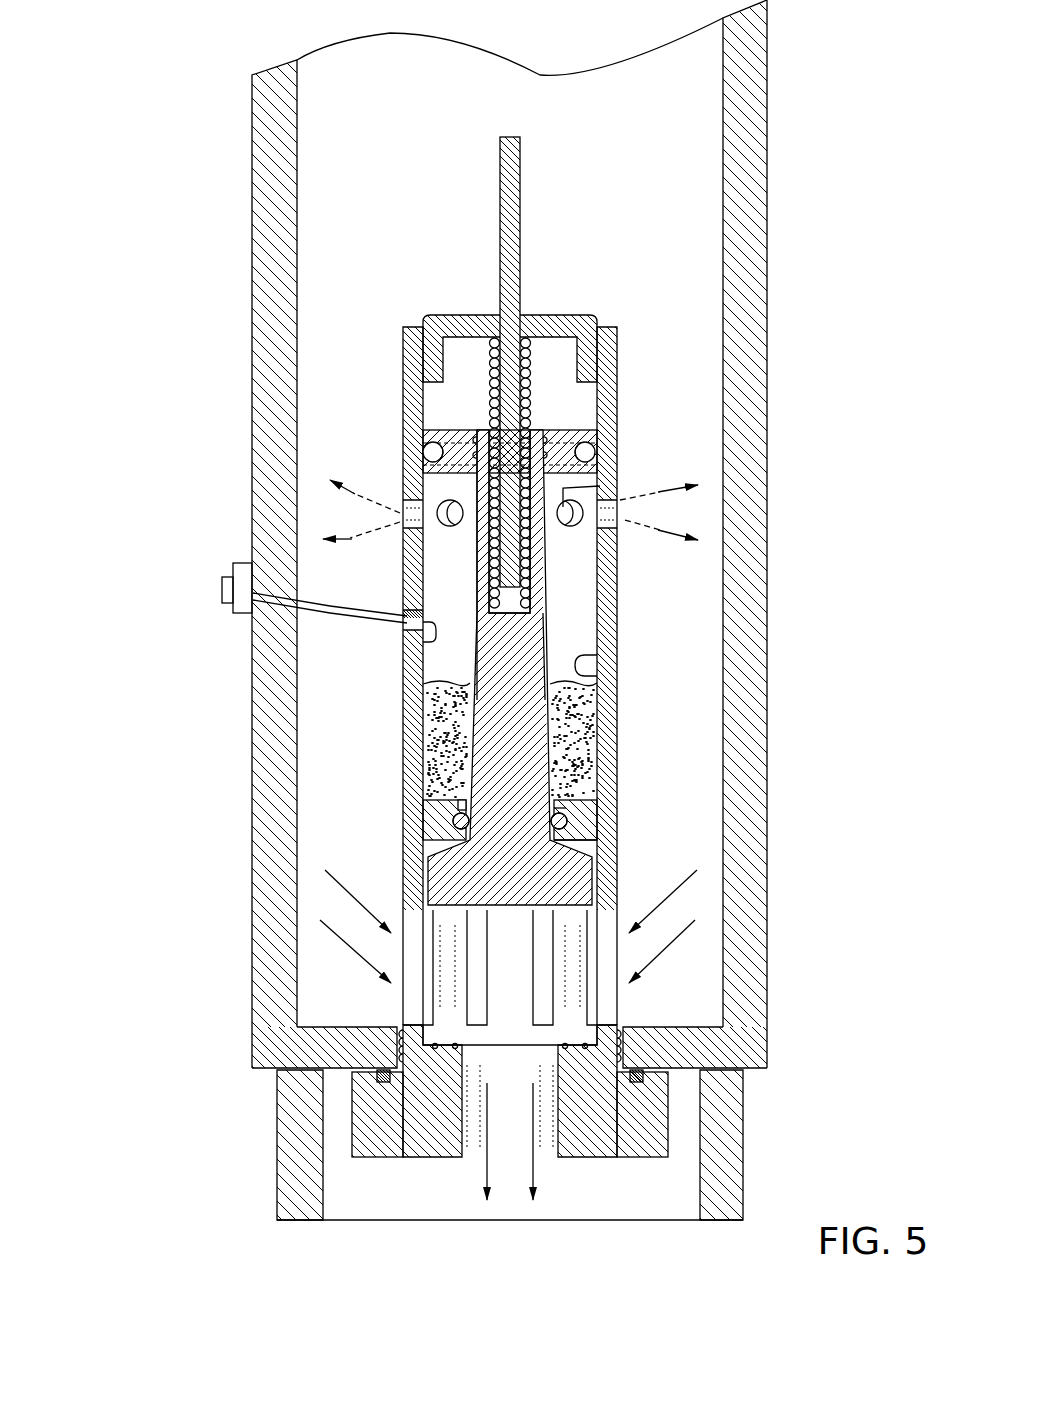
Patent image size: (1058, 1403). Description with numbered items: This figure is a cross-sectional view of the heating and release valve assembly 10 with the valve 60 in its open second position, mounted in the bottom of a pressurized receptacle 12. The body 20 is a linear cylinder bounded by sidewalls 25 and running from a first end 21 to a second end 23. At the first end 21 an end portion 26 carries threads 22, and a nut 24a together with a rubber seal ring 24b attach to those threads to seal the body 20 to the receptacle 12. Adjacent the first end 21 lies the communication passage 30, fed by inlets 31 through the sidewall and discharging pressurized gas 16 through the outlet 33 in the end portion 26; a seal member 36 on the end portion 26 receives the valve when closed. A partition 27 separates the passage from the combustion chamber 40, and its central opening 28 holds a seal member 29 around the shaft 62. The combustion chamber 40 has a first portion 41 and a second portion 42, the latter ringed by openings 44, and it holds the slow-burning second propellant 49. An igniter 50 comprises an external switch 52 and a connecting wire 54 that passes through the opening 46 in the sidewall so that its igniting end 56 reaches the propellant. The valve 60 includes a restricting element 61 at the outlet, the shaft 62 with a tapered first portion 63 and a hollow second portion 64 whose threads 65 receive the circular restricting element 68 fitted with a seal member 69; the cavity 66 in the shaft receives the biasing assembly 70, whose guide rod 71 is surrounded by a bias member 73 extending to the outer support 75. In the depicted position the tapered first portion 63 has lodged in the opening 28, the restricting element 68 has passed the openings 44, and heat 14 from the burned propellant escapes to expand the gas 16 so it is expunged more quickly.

The heating and release valve assembly 10 is at (458, 290).
The receptacle 12 is at (752, 188).
The heat 14 is at (400, 513).
The pressurized gas 16 is at (680, 870).
The body 20 is at (628, 745).
The first end 21 is at (655, 1020).
The threads 22 is at (645, 1078).
The second end 23 is at (391, 357).
The nut 24a is at (352, 1096).
The rubber seal ring 24b is at (657, 1125).
The sidewall 25 is at (430, 797).
The end portion 26 is at (427, 1062).
The partition 27 is at (600, 822).
The opening 28 is at (448, 842).
The seal member 29 is at (592, 846).
The communication passage 30 is at (583, 987).
The inlet 31 is at (398, 1030).
The outlet 33 is at (507, 1072).
The seal member 36 is at (585, 1052).
The combustion chamber 40 is at (603, 600).
The first portion 41 is at (598, 670).
The second portion 42 is at (580, 533).
The openings 44 is at (600, 486).
The opening 46 is at (408, 617).
The second propellant 49 is at (578, 707).
The igniter 50 is at (226, 566).
The switch 52 is at (226, 600).
The connecting wire 54 is at (310, 610).
The igniting end 56 is at (425, 635).
The valve 60 is at (460, 777).
The restricting element 61 is at (580, 880).
The shaft 62 is at (466, 734).
The first portion 63 is at (455, 818).
The second portion 64 is at (477, 647).
The threads 65 is at (555, 430).
The cavity 66 is at (477, 537).
The restricting element 68 is at (430, 432).
The seal member 69 is at (430, 450).
The biasing assembly 70 is at (550, 384).
The guide rod 71 is at (502, 152).
The bias member 73 is at (526, 366).
The outer support 75 is at (435, 318).